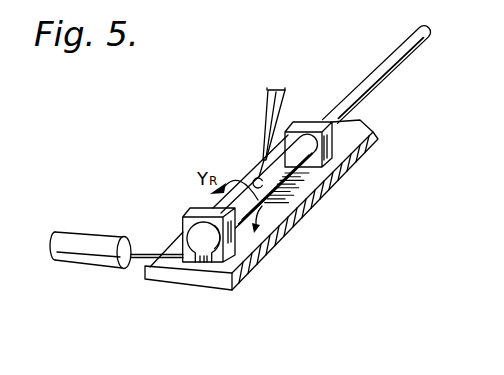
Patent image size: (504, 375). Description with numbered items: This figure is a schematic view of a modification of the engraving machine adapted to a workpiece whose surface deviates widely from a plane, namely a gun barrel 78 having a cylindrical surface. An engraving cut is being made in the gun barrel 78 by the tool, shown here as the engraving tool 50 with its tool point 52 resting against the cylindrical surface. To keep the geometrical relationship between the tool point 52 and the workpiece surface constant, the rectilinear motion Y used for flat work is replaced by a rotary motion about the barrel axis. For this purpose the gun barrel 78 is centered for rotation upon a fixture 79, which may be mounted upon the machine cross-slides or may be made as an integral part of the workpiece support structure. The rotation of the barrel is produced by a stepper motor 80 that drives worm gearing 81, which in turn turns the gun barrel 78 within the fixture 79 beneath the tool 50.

The stylus 50 is at (267, 110).
The stylus tip 52 is at (262, 157).
The gun barrel 78 is at (384, 63).
The fixture 79 is at (312, 200).
The stepper motor 80 is at (93, 262).
The worm gearing 81 is at (211, 262).